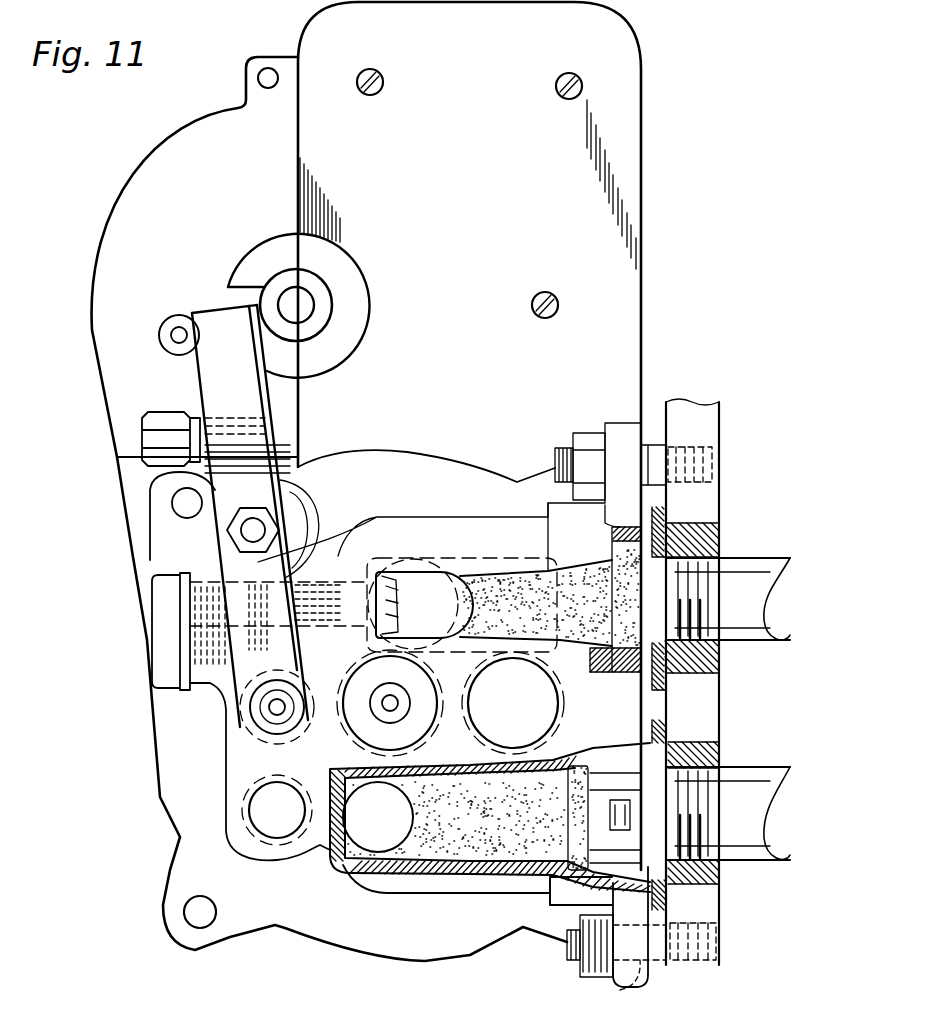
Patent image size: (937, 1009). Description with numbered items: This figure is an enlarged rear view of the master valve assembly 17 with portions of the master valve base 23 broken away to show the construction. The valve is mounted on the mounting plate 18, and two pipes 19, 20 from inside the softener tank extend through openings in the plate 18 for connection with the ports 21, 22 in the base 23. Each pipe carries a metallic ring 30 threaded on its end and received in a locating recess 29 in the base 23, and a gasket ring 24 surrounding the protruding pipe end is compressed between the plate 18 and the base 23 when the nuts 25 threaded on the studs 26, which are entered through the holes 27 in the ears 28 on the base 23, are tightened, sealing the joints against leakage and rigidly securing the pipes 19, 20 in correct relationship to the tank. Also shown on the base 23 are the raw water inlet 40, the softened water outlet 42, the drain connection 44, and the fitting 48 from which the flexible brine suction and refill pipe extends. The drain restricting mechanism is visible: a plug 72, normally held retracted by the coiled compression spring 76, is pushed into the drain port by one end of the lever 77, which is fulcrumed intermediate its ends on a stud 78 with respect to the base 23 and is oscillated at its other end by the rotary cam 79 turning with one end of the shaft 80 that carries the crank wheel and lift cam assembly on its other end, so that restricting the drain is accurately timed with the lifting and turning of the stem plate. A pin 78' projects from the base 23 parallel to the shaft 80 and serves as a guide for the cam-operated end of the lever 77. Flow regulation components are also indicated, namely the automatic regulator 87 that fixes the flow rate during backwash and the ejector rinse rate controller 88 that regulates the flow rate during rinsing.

The master valve assembly 17 is at (651, 271).
The mounting plate 18 is at (721, 428).
The pipe 19 is at (748, 642).
The pipe 20 is at (750, 767).
The port 21 is at (615, 599).
The port 22 is at (568, 837).
The master valve base 23 is at (410, 958).
The gasket ring 24 is at (656, 735).
The nut 25 is at (590, 966).
The stud 26 is at (567, 950).
The hole 27 is at (618, 989).
The ear 28 is at (618, 425).
The locating recess 29 is at (611, 533).
The metallic ring 30 is at (640, 598).
The inlet 40 is at (346, 740).
The outlet 42 is at (490, 737).
The drain connection 44 is at (268, 826).
The fitting 48 is at (280, 440).
The plug 72 is at (268, 710).
The coiled compression spring 76 is at (270, 742).
The lever 77 is at (206, 310).
The stud 78 is at (289, 524).
The pin 78' is at (167, 353).
The rotary cam 79 is at (362, 333).
The shaft 80 is at (313, 305).
The automatic regulator 87 is at (557, 903).
The ejector rinse rate controller 88 is at (172, 684).